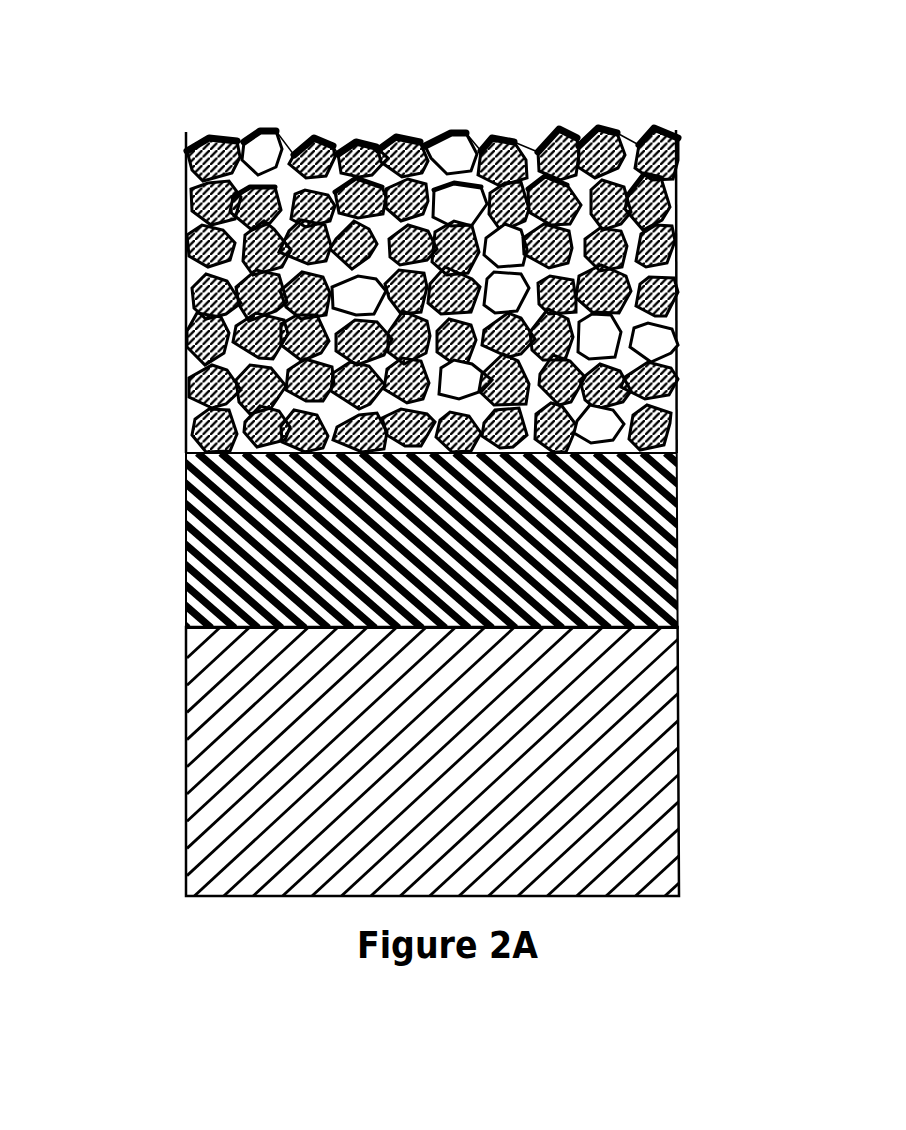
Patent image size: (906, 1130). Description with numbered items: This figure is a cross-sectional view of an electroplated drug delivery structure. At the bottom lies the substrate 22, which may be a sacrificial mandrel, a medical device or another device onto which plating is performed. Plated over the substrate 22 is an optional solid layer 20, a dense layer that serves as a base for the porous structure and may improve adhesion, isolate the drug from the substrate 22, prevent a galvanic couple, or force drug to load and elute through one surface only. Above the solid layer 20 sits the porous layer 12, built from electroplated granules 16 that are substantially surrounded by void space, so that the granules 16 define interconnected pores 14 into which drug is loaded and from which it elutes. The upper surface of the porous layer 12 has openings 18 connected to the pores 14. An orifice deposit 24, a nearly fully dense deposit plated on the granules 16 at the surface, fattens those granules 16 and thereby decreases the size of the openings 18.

The porous layer 12 is at (427, 235).
The pores 14 is at (700, 215).
The granules 16 is at (700, 382).
The openings 18 is at (403, 130).
The solid layer 20 is at (165, 542).
The substrate 22 is at (165, 711).
The orifice deposit 24 is at (205, 110).